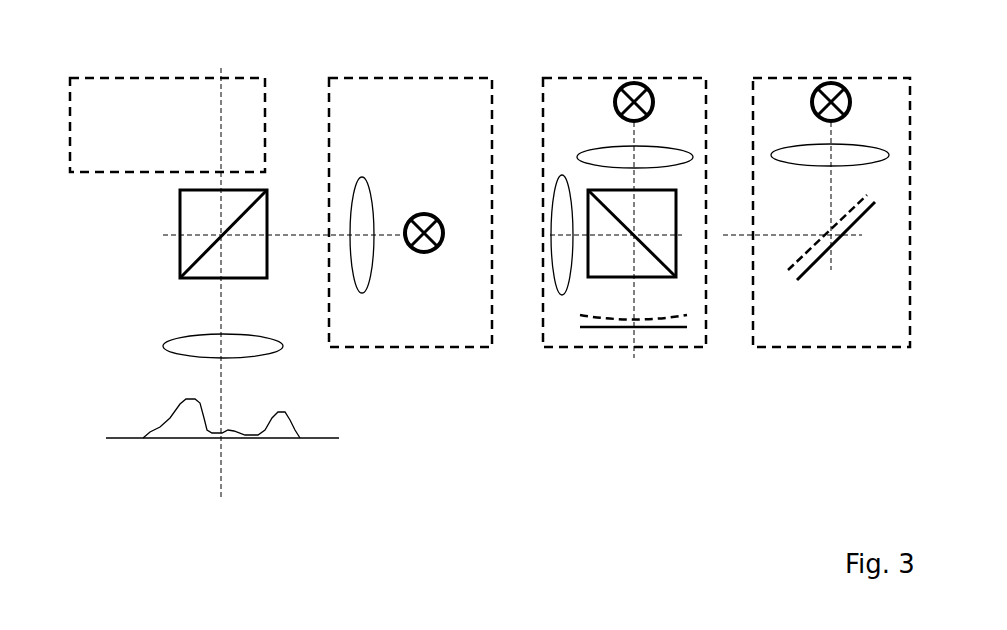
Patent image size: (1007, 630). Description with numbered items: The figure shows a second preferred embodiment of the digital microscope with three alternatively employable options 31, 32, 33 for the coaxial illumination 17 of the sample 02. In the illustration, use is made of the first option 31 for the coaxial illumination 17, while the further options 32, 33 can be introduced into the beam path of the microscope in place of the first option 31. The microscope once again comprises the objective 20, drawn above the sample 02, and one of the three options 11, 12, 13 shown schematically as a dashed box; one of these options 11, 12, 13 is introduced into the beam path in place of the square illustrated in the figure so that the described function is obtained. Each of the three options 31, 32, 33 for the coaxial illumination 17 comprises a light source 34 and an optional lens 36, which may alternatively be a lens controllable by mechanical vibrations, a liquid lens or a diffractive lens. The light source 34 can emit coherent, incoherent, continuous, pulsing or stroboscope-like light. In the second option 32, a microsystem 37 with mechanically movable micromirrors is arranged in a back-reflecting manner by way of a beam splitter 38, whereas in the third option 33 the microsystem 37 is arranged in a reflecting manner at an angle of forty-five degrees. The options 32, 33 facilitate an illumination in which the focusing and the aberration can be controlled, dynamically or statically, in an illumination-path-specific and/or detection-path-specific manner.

The sample 02 is at (160, 427).
The first option 11 is at (149, 91).
The second option 12 is at (167, 125).
The third option 13 is at (100, 78).
The coaxial illumination 17 is at (254, 154).
The objective 20 is at (178, 340).
The first option for the coaxial illumination 31 is at (455, 78).
The second option for the coaxial illumination 32 is at (688, 78).
The third option for the coaxial illumination 33 is at (893, 78).
The light source 34 is at (427, 253).
The lens 36 is at (363, 290).
The microsystem 37 is at (645, 322).
The beam splitter 38 is at (676, 277).